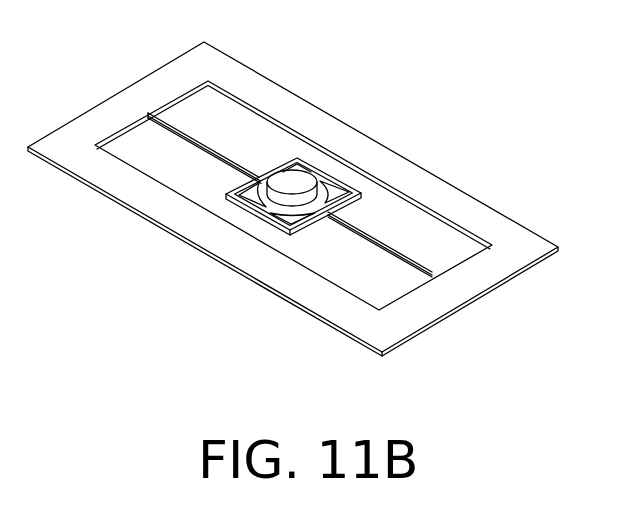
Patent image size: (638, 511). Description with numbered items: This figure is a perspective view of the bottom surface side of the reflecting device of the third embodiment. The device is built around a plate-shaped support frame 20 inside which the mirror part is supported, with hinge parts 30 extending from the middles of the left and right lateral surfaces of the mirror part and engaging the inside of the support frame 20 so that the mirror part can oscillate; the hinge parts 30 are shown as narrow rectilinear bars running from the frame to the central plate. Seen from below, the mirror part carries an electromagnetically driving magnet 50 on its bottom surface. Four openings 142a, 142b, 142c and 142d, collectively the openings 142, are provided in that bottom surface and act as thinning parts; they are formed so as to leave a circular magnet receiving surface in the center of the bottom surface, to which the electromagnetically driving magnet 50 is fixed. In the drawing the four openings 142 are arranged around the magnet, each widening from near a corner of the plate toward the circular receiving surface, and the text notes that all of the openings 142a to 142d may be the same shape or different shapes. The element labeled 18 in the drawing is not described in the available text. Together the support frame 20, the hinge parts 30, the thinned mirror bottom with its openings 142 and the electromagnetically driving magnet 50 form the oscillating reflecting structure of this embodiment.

The plate / base member 18 is at (291, 236).
The support frame 20 is at (362, 325).
The hinge parts 30 is at (192, 145).
The electromagnetically driving magnet 50 is at (284, 177).
The openings 142 is at (315, 211).
The opening 142a is at (333, 187).
The opening 142b is at (300, 165).
The opening 142c is at (296, 220).
The opening 142d is at (237, 206).